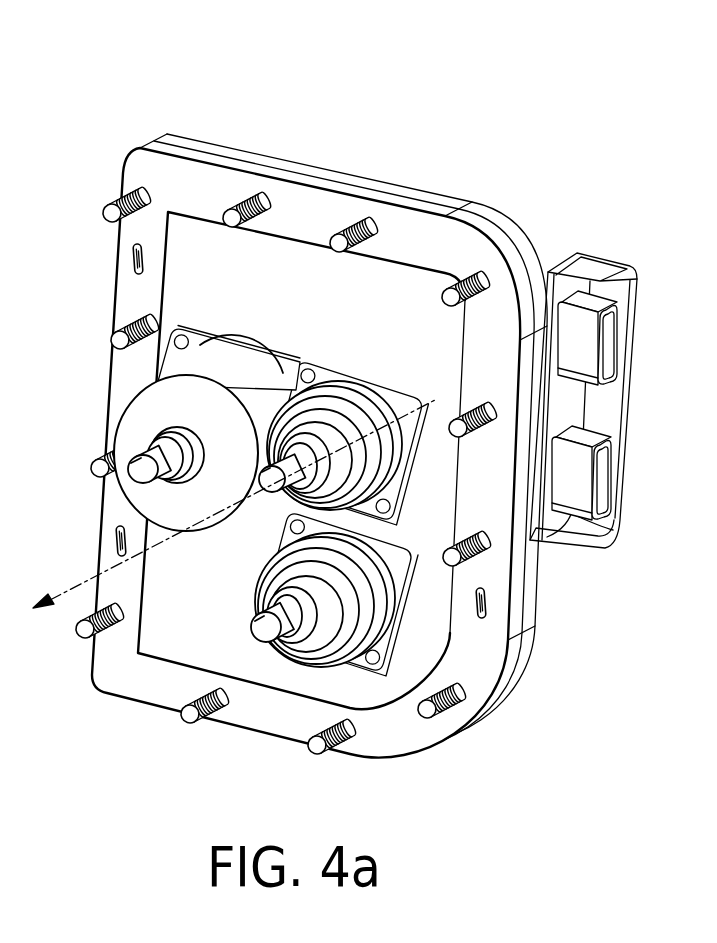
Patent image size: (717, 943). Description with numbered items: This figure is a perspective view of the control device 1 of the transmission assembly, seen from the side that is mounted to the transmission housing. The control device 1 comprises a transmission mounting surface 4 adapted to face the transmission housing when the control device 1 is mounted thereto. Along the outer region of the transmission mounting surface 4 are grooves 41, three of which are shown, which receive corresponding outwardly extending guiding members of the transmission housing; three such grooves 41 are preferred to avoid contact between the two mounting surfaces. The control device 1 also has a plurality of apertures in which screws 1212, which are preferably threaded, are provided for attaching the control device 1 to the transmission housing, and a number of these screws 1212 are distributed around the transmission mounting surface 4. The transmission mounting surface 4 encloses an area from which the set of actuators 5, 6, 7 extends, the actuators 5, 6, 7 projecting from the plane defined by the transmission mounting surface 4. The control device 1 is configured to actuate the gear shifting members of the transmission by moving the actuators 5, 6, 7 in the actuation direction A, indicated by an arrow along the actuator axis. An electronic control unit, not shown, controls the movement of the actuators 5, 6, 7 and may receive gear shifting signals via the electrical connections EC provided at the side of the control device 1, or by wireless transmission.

The control device 1 is at (213, 160).
The transmission mounting surface 4 is at (302, 215).
The actuator 5 is at (190, 497).
The actuator 6 is at (290, 648).
The actuator 7 is at (333, 442).
The groove 41 is at (133, 260).
The screw 1212 is at (481, 290).
The electrical connections EC is at (643, 353).
The actuation direction A is at (232, 504).